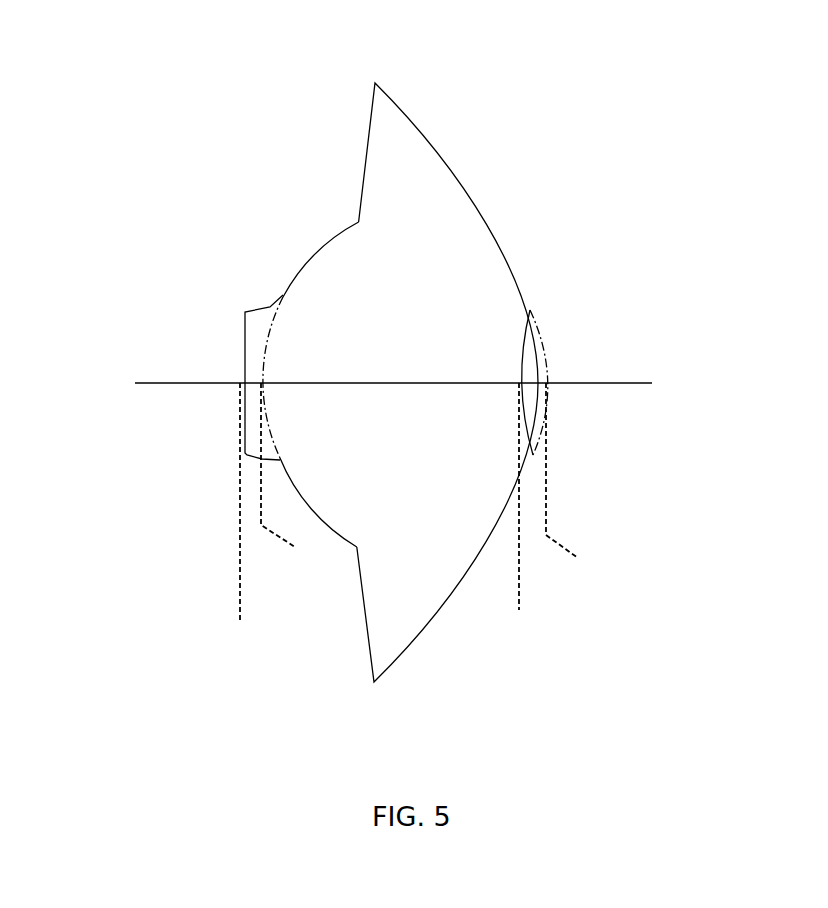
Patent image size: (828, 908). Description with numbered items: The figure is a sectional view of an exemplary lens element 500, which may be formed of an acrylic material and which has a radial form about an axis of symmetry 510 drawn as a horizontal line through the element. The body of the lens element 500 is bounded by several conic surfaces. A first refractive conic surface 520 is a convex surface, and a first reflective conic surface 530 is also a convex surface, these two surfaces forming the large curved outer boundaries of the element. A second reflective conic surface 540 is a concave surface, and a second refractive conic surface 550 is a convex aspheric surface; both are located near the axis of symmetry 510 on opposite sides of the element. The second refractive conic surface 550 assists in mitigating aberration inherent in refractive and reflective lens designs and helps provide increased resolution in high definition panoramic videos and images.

The lens element 500 is at (505, 127).
The axis of symmetry 510 is at (598, 383).
The first refractive conic surface 520 is at (505, 243).
The first reflective conic surface 530 is at (337, 233).
The second reflective conic surface 540 is at (522, 353).
The second refractive conic surface 550 is at (243, 352).